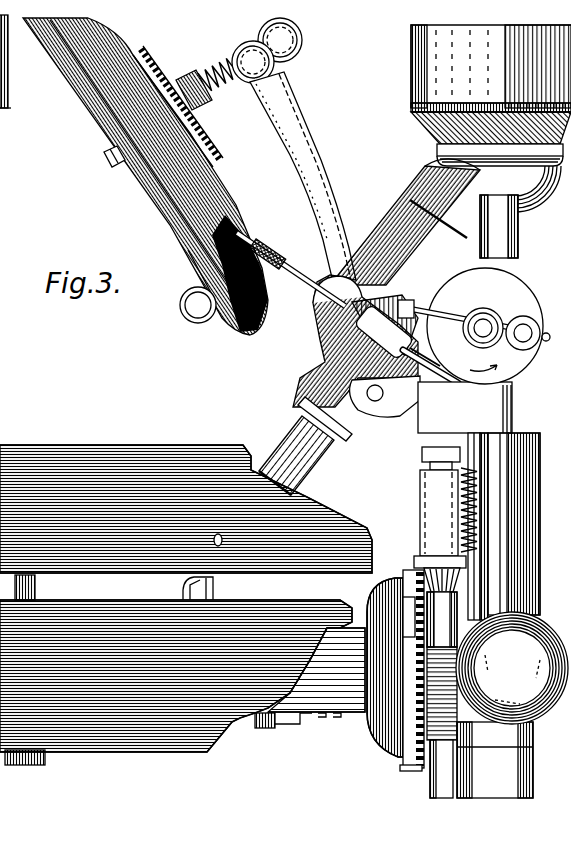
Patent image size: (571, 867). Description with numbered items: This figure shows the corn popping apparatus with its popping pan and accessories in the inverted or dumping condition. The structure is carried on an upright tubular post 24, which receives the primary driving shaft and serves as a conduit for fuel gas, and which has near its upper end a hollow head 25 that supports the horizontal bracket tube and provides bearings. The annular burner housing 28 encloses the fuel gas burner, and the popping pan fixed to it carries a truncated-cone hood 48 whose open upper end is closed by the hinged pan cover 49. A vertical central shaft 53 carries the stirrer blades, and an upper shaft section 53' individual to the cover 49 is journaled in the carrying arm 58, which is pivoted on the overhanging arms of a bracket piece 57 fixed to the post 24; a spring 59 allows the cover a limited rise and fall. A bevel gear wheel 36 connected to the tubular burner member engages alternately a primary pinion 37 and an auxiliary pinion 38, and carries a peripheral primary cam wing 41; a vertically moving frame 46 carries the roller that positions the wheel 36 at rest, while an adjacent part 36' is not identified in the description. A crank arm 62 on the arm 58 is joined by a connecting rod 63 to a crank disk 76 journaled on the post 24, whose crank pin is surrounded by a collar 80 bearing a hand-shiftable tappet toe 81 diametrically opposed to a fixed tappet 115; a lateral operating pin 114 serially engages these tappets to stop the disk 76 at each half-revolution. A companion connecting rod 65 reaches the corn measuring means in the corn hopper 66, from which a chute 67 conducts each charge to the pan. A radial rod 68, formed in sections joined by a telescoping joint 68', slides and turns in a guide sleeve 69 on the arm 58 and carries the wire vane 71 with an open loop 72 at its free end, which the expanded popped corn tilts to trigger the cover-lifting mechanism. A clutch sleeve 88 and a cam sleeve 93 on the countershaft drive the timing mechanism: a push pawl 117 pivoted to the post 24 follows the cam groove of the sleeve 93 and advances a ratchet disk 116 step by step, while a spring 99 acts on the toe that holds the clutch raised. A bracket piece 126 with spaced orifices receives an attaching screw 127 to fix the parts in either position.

The upright tubular post 24 is at (495, 760).
The hollow head 25 is at (512, 668).
The burner housing 28 is at (127, 743).
The bevel gear wheel 36 is at (380, 670).
The housing extension 36' is at (316, 670).
The primary pinion 37 is at (476, 570).
The auxiliary pinion 38 is at (465, 590).
The primary cam wing 41 is at (412, 613).
The vertically moving frame 46 is at (426, 790).
The hood 48 is at (144, 445).
The pan cover 49 is at (228, 188).
The central shaft 53 is at (40, 587).
The upper shaft section 53' is at (107, 167).
The bracket piece 57 is at (465, 407).
The carrying arm 58 is at (320, 152).
The spring 59 is at (226, 92).
The crank arm 62 is at (379, 296).
The connecting rod 63 is at (474, 316).
The connecting rod 65 is at (487, 230).
The corn hopper 66 is at (491, 118).
The chute 67 is at (405, 222).
The radially disposed rod 68 is at (353, 308).
The telescoping joint 68' is at (267, 239).
The guide sleeve 69 is at (322, 302).
The vane 71 is at (200, 268).
The open loop 72 is at (182, 318).
The crank disk 76 is at (525, 297).
The inclosing collar 80 is at (537, 332).
The tappet toe 81 is at (546, 343).
The clutch sleeve 88 is at (420, 531).
The cam sleeve 93 is at (422, 455).
The spring 99 is at (385, 396).
The operating pin 114 is at (455, 319).
The fixed tappet 115 is at (437, 354).
The ratchet disk 116 is at (478, 520).
The push pawl 117 is at (478, 458).
The bracket piece 126 is at (293, 728).
The attaching screw 127 is at (264, 730).